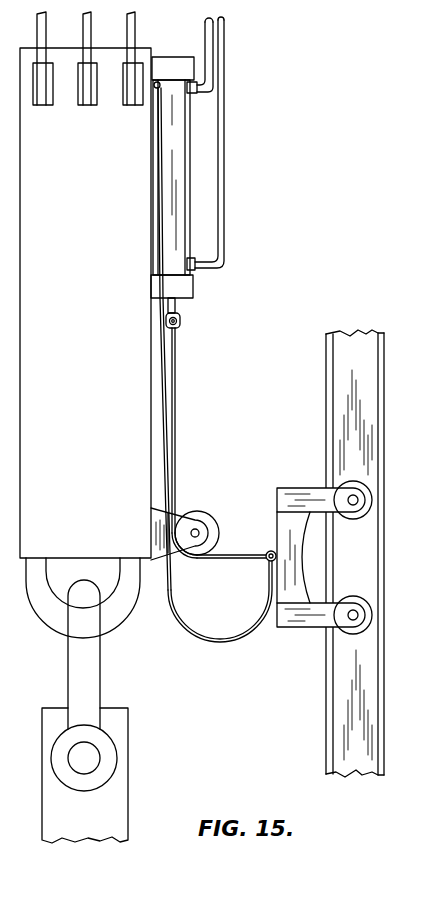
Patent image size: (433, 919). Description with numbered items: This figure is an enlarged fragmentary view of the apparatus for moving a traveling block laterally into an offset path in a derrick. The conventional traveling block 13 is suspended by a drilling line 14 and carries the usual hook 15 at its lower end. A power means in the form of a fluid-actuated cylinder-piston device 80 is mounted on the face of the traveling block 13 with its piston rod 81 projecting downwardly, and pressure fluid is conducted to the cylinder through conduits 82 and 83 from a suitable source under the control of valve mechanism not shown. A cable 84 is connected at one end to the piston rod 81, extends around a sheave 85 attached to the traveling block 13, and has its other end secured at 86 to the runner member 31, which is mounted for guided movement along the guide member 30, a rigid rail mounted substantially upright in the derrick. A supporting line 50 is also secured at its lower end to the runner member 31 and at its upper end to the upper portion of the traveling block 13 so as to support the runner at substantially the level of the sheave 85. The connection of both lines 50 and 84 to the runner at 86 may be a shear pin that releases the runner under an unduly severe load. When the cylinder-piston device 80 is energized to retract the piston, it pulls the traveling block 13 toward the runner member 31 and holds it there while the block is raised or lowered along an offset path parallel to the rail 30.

The traveling block 13 is at (88, 248).
The drilling line 14 is at (83, 31).
The hook 15 is at (120, 782).
The guide member 30 is at (342, 382).
The runner member 31 is at (298, 488).
The supporting line 50 is at (158, 358).
The fluid-actuated cylinder-piston device 80 is at (177, 190).
The piston rod 81 is at (178, 304).
The conduit 82 is at (205, 37).
The conduit 83 is at (222, 148).
The cable 84 is at (176, 366).
The sheave 85 is at (208, 522).
The connection 86 is at (266, 562).